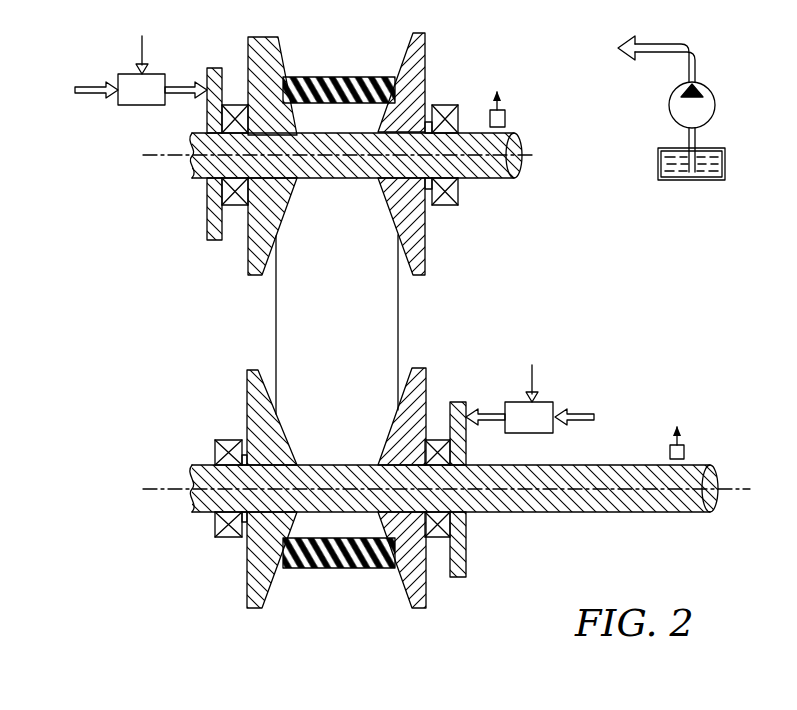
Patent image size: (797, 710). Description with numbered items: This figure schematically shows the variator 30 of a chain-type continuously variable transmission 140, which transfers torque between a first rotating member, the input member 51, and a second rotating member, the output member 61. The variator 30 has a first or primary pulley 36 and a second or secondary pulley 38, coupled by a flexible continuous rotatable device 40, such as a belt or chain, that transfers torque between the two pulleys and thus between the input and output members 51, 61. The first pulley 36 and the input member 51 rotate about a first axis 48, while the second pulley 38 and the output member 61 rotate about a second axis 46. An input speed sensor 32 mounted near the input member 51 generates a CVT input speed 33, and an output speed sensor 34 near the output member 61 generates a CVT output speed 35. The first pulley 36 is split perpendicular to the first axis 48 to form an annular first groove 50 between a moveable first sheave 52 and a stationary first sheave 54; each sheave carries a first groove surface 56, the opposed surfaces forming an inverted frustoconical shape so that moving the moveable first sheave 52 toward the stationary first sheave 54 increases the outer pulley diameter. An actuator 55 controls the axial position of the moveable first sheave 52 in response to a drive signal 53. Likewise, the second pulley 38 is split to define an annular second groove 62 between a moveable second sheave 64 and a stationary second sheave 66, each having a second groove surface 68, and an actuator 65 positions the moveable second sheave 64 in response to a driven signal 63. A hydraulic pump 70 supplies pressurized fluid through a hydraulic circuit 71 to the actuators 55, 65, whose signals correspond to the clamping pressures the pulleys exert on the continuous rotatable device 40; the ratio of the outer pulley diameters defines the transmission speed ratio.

The continuously variable transmission 140 is at (181, 622).
The variator 30 is at (240, 576).
The input speed sensor 32 is at (505, 118).
The CVT input speed 33 is at (488, 116).
The output speed sensor 34 is at (684, 452).
The CVT output speed 35 is at (669, 445).
The first pulley 36 is at (434, 82).
The second pulley 38 is at (432, 593).
The continuous rotatable device 40 is at (399, 303).
The second axis 46 is at (167, 490).
The first axis 48 is at (148, 155).
The annular first groove 50 is at (369, 73).
The input member 51 is at (490, 180).
The moveable first sheave 52 is at (248, 57).
The drive signal 53 is at (155, 31).
The stationary first sheave 54 is at (421, 58).
The actuator 55 is at (155, 103).
The first groove surface 56 is at (284, 82).
The output member 61 is at (508, 513).
The annular second groove 62 is at (328, 578).
The driven signal 63 is at (545, 360).
The moveable second sheave 64 is at (427, 388).
The actuator 65 is at (542, 431).
The stationary second sheave 66 is at (247, 388).
The second groove surface 68 is at (268, 388).
The hydraulic pump 70 is at (715, 103).
The hydraulic circuit 71 is at (72, 101).